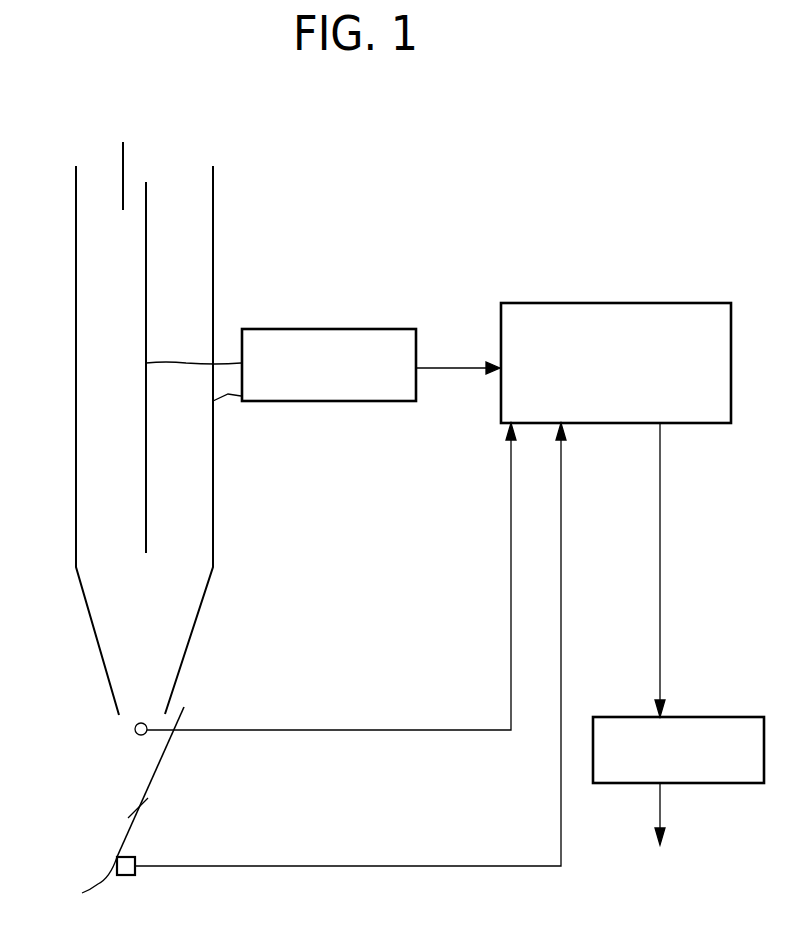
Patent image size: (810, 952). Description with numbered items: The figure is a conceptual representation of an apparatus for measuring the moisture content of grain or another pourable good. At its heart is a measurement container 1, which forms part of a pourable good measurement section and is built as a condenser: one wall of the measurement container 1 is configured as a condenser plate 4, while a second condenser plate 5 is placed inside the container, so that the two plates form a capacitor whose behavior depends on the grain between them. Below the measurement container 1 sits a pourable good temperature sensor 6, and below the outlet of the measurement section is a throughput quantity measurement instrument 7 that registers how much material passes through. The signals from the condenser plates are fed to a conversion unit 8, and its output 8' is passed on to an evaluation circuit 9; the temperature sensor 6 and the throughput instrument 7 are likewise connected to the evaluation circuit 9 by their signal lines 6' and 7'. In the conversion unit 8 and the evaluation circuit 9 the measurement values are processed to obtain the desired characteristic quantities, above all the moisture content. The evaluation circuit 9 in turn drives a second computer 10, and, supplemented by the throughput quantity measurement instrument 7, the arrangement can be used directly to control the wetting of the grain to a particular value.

The measurement container 1 is at (123, 160).
The condenser plate 4 is at (76, 225).
The second condenser plate 5 is at (146, 262).
The pourable good temperature sensor 6 is at (108, 734).
The sensor signal line 6' is at (331, 576).
The throughput quantity measurement instrument 7 is at (133, 883).
The sensor signal line 7' is at (350, 644).
The conversion unit 8 is at (329, 347).
The conversion unit output signal 8' is at (458, 386).
The evaluation circuit 9 is at (643, 303).
The second computer 10 is at (669, 717).